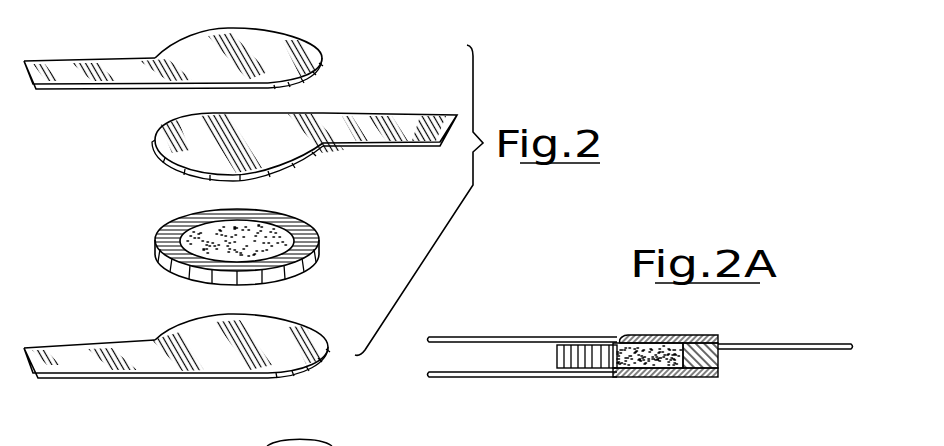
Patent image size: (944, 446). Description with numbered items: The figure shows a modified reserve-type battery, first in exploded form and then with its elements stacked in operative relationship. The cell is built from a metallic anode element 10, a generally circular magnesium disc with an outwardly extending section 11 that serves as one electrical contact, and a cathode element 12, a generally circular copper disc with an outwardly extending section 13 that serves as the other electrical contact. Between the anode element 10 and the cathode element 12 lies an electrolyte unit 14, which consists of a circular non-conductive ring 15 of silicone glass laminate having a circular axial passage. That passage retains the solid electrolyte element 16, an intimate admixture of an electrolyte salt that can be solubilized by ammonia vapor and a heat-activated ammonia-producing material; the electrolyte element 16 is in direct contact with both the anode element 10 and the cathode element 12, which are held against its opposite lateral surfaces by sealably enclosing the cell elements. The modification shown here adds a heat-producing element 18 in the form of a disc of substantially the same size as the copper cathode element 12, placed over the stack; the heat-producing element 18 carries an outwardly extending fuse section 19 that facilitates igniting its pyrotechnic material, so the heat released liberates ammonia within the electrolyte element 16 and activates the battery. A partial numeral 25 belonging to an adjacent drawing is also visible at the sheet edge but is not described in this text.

In FIG. 2, the metallic anode element 10 is at (283, 346).
In FIG. 2A, the metallic anode element 10 is at (700, 377).
In FIG. 2, the outwardly extending section 11 is at (105, 362).
In FIG. 2A, the outwardly extending section 11 is at (473, 377).
In FIG. 2, the cathode element 12 is at (180, 148).
In FIG. 2A, the cathode element 12 is at (557, 345).
In FIG. 2, the outwardly extending section 13 is at (373, 130).
In FIG. 2A, the outwardly extending section 13 is at (755, 344).
In FIG. 2, the electrolyte unit 14 is at (156, 260).
In FIG. 2A, the electrolyte unit 14 is at (592, 362).
In FIG. 2, the non-conductive ring 15 is at (305, 237).
In FIG. 2A, the non-conductive ring 15 is at (722, 362).
In FIG. 2, the electrolyte element 16 is at (203, 236).
In FIG. 2A, the electrolyte element 16 is at (653, 368).
In FIG. 2, the heat-producing element 18 is at (278, 56).
In FIG. 2A, the heat-producing element 18 is at (648, 336).
In FIG. 2, the fuse section 19 is at (86, 73).
In FIG. 2A, the fuse section 19 is at (449, 337).
In FIG. 2, the plate of adjacent figure 25 is at (265, 442).